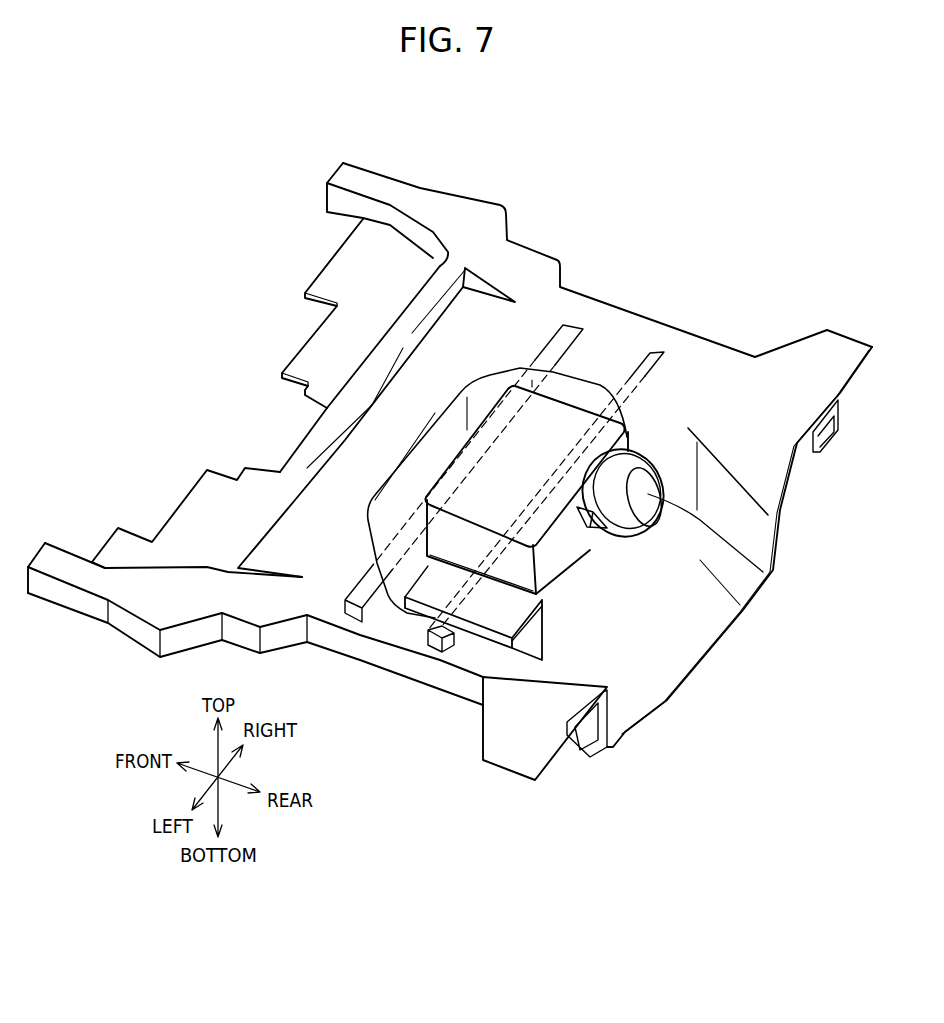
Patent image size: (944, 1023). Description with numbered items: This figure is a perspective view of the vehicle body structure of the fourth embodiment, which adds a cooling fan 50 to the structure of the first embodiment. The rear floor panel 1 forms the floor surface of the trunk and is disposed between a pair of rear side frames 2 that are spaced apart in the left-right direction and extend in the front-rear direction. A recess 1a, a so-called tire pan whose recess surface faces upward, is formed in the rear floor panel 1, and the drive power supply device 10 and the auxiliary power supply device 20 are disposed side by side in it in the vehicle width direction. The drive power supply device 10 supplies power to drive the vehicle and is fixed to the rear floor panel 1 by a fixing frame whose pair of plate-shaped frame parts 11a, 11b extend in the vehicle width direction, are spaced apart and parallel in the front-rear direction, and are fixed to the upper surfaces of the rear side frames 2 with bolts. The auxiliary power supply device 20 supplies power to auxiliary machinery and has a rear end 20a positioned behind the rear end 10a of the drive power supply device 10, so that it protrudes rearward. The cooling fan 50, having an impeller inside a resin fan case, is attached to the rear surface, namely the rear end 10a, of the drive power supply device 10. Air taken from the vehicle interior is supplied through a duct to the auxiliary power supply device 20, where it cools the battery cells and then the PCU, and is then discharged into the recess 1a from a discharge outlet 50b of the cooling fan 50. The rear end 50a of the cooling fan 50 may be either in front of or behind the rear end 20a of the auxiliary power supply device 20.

The rear floor panel 1 is at (792, 378).
The recess 1a is at (685, 636).
The rear side frame 2 is at (832, 440).
The drive power supply device 10 is at (585, 555).
The rear end of the drive power supply device 10a is at (565, 562).
The frame part 11a is at (573, 322).
The frame part 11b is at (662, 340).
The auxiliary power supply device 20 is at (550, 622).
The rear end of the auxiliary power supply device 20a is at (530, 642).
The cooling fan 50 is at (638, 447).
The rear end of the cooling fan 50a is at (637, 503).
The discharge outlet 50b is at (583, 543).